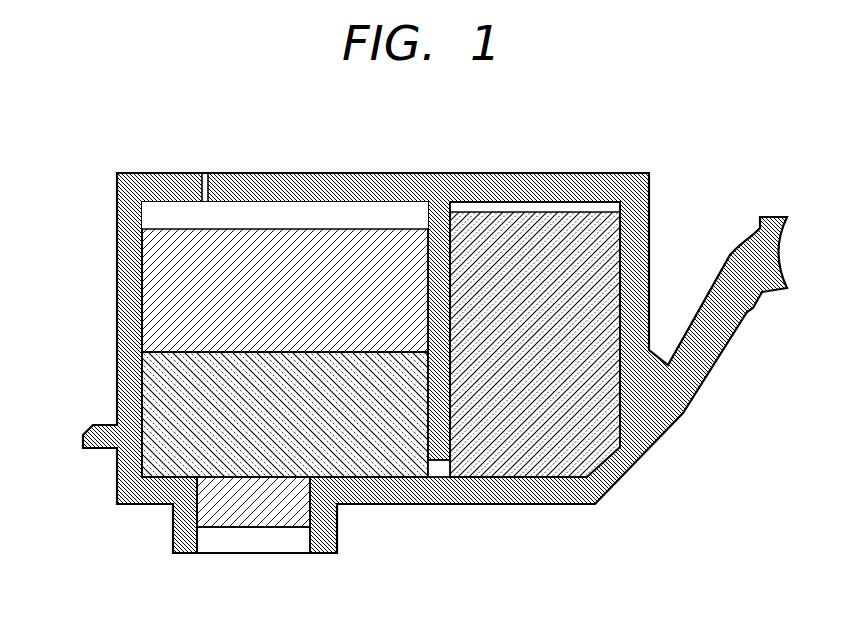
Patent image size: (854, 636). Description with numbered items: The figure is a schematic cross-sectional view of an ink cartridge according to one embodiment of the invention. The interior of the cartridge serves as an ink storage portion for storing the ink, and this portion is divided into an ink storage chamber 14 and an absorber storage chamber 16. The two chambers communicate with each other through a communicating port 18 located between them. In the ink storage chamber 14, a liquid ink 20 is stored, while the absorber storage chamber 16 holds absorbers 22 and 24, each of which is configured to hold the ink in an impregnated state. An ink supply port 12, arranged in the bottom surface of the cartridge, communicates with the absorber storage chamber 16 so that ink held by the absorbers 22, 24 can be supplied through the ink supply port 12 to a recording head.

The ink supply port 12 is at (260, 543).
The ink storage chamber 14 is at (585, 208).
The absorber storage chamber 16 is at (263, 217).
The communicating port 18 is at (433, 467).
The liquid ink 20 is at (550, 440).
The absorber 22 is at (163, 393).
The absorber 24 is at (163, 289).